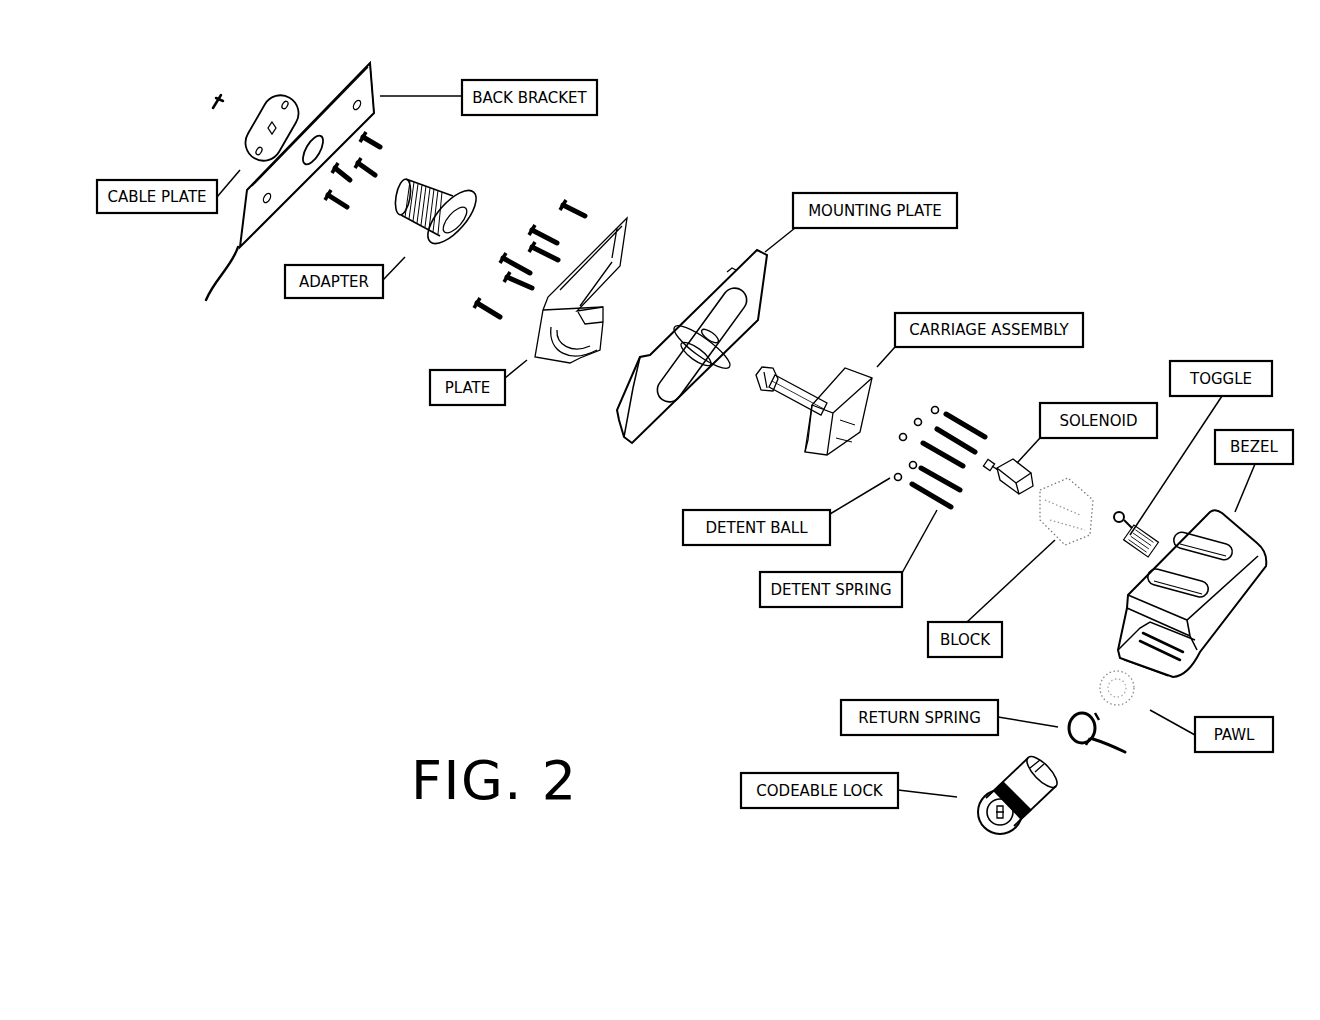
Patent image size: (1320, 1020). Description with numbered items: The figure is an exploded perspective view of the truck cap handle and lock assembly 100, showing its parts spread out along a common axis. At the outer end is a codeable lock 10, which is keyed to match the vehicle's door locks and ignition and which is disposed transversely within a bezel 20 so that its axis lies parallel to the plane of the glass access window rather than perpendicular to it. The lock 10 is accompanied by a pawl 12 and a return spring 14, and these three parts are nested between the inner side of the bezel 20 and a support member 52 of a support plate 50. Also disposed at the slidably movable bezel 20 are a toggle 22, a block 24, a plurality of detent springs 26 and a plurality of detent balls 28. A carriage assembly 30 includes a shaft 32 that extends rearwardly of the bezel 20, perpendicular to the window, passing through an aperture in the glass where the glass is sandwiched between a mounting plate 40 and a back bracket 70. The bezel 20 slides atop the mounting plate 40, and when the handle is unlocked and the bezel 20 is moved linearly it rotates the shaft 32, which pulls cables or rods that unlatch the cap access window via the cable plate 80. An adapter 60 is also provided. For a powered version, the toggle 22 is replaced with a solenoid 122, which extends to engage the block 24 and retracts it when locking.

The codeable lock 10 is at (1040, 803).
The pawl 12 is at (1140, 700).
The return spring 14 is at (1111, 744).
The bezel 20 is at (1245, 537).
The toggle 22 is at (1131, 545).
The block 24 is at (1073, 488).
The detent springs 26 is at (975, 420).
The detent balls 28 is at (934, 404).
The carriage assembly 30 is at (829, 387).
The shaft 32 is at (778, 395).
The mounting plate 40 is at (628, 443).
The support plate 50 is at (626, 253).
The support member 52 is at (560, 360).
The adapter 60 is at (443, 184).
The back bracket 70 is at (213, 295).
The cable plate 80 is at (254, 130).
The truck cap handle and lock assembly 100 is at (376, 516).
The solenoid 122 is at (1006, 492).